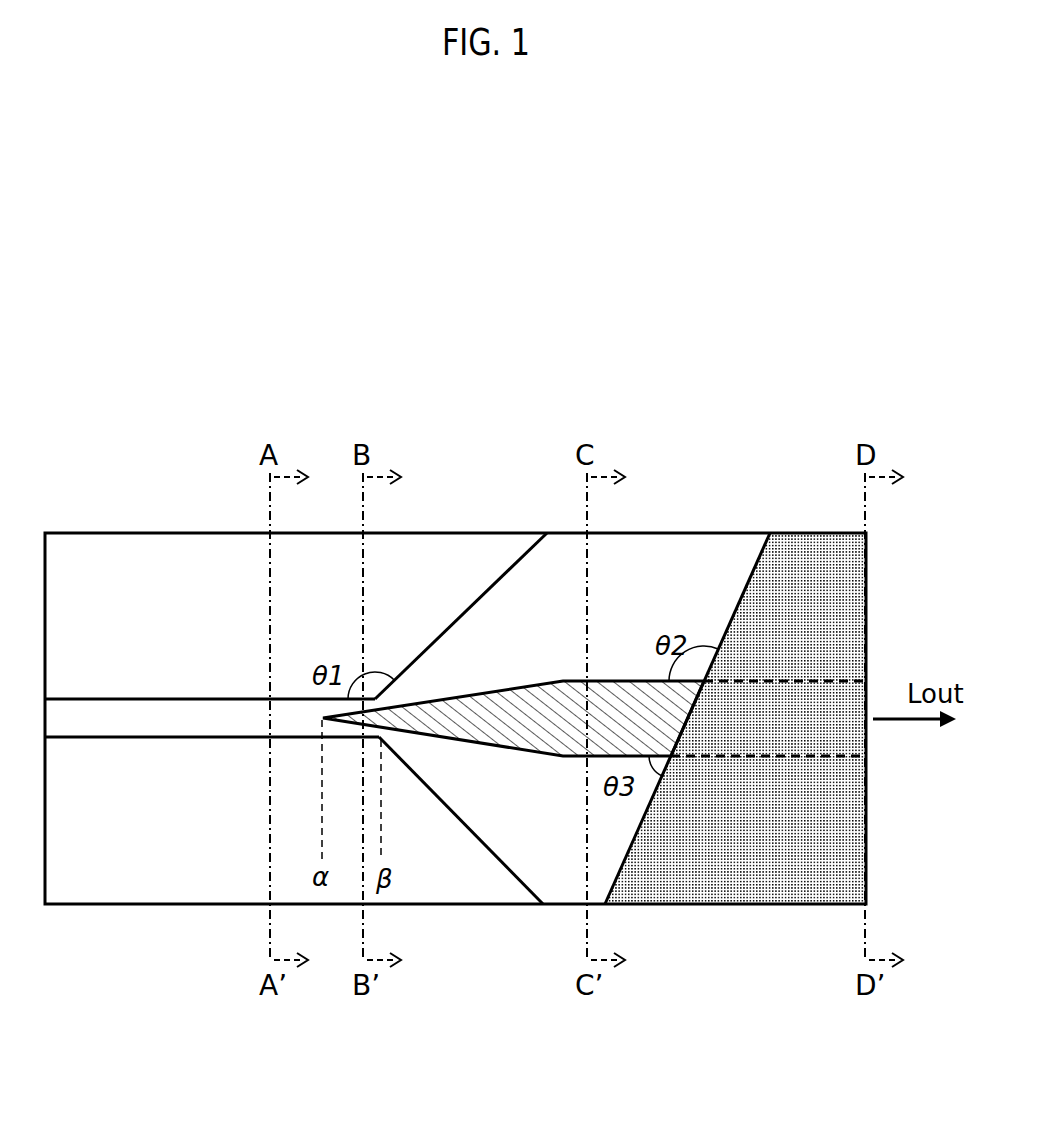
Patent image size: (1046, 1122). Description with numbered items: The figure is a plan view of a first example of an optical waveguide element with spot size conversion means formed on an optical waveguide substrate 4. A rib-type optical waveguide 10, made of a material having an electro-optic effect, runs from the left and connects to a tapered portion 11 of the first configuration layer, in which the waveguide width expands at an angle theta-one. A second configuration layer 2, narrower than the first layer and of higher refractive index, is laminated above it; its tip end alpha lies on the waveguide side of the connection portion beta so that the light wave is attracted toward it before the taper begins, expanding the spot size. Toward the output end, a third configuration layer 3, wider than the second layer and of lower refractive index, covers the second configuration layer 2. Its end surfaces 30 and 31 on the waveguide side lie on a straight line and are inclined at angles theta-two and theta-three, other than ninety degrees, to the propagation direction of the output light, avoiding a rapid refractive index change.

The second configuration layer 2 is at (485, 742).
The third configuration layer 3 is at (750, 850).
The optical waveguide substrate 4 is at (160, 877).
The rib-type optical waveguide 10 is at (124, 700).
The tapered portion 11 is at (468, 600).
The end surface 30 is at (740, 600).
The end surface 31 is at (645, 855).